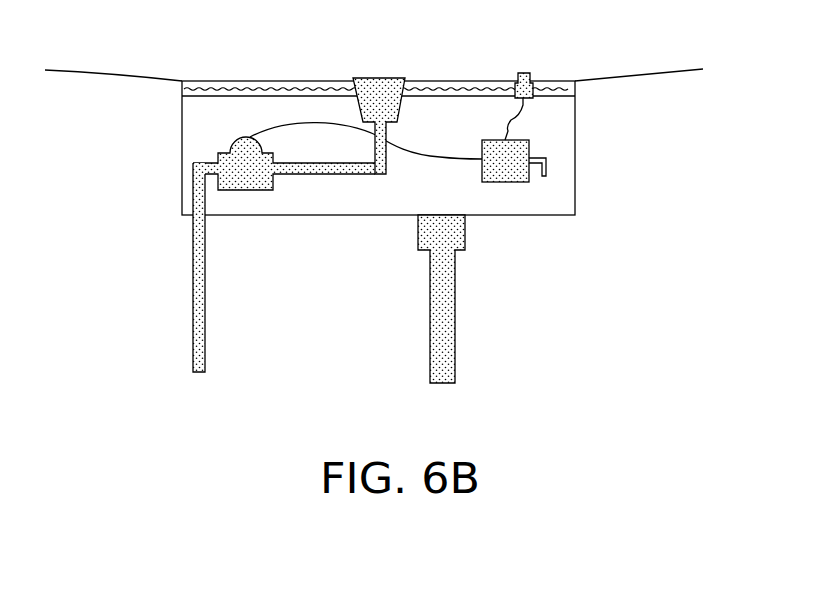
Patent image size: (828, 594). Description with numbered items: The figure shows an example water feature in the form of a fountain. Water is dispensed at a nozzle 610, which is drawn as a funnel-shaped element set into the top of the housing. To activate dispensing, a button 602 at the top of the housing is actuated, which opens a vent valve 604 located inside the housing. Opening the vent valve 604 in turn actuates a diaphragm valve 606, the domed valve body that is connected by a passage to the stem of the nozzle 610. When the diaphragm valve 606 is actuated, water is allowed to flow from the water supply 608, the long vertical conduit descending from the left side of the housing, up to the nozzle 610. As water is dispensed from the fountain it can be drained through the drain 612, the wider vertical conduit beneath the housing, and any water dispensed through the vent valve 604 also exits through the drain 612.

The button 602 is at (528, 73).
The vent valve 604 is at (530, 149).
The diaphragm valve 606 is at (235, 140).
The water supply 608 is at (202, 288).
The nozzle 610 is at (363, 78).
The drain 612 is at (435, 337).